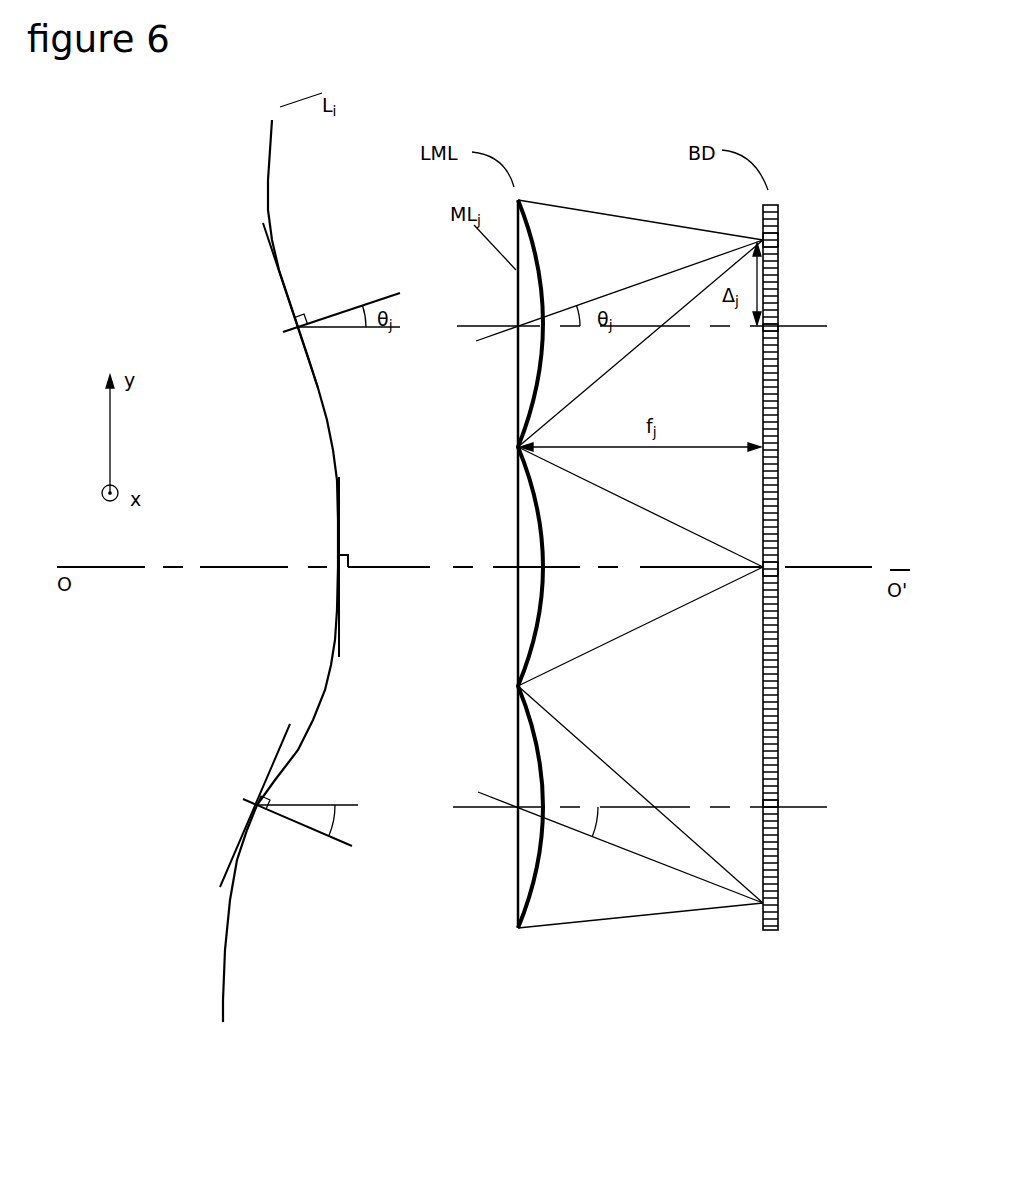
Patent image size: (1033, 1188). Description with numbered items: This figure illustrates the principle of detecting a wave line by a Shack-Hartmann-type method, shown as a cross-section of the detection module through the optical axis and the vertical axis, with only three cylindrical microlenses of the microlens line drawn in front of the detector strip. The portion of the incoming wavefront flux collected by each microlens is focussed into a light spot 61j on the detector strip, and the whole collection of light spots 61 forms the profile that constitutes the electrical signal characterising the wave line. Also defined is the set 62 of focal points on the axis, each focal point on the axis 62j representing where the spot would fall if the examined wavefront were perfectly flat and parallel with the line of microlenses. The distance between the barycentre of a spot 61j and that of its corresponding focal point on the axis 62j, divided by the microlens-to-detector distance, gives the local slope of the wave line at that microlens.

The light spots 61 is at (791, 536).
The light spot 61j is at (802, 234).
The set of focal points on the axis 62 is at (791, 783).
The focal point on the axis 62j is at (810, 337).